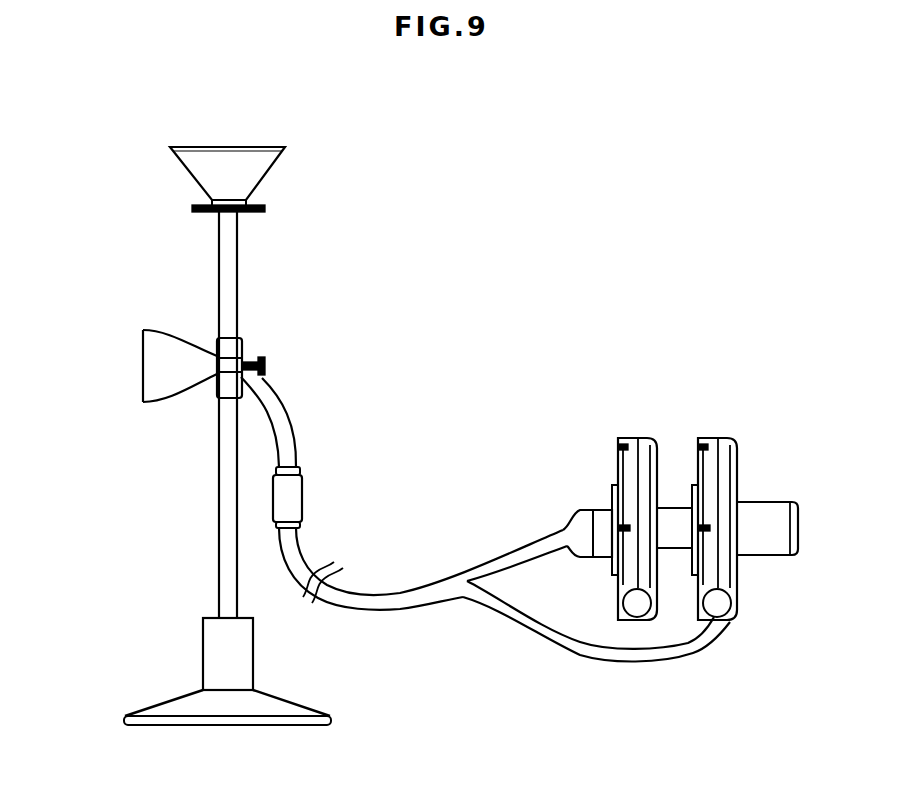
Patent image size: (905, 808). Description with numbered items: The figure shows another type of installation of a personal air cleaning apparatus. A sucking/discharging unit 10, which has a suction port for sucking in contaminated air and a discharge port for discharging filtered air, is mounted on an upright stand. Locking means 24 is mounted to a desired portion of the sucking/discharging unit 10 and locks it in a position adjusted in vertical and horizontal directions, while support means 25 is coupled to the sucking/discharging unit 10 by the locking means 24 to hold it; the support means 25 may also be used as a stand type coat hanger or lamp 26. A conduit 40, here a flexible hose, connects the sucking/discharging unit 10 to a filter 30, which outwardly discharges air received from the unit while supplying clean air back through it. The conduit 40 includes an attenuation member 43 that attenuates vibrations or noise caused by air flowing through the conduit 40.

The sucking/discharging unit 10 is at (162, 406).
The locking means 24 is at (251, 345).
The support means 25 is at (206, 515).
The stand type coat hanger or lamp 26 is at (247, 168).
The filter 30 is at (672, 405).
The conduit 40 is at (366, 605).
The attenuation member 43 is at (293, 500).